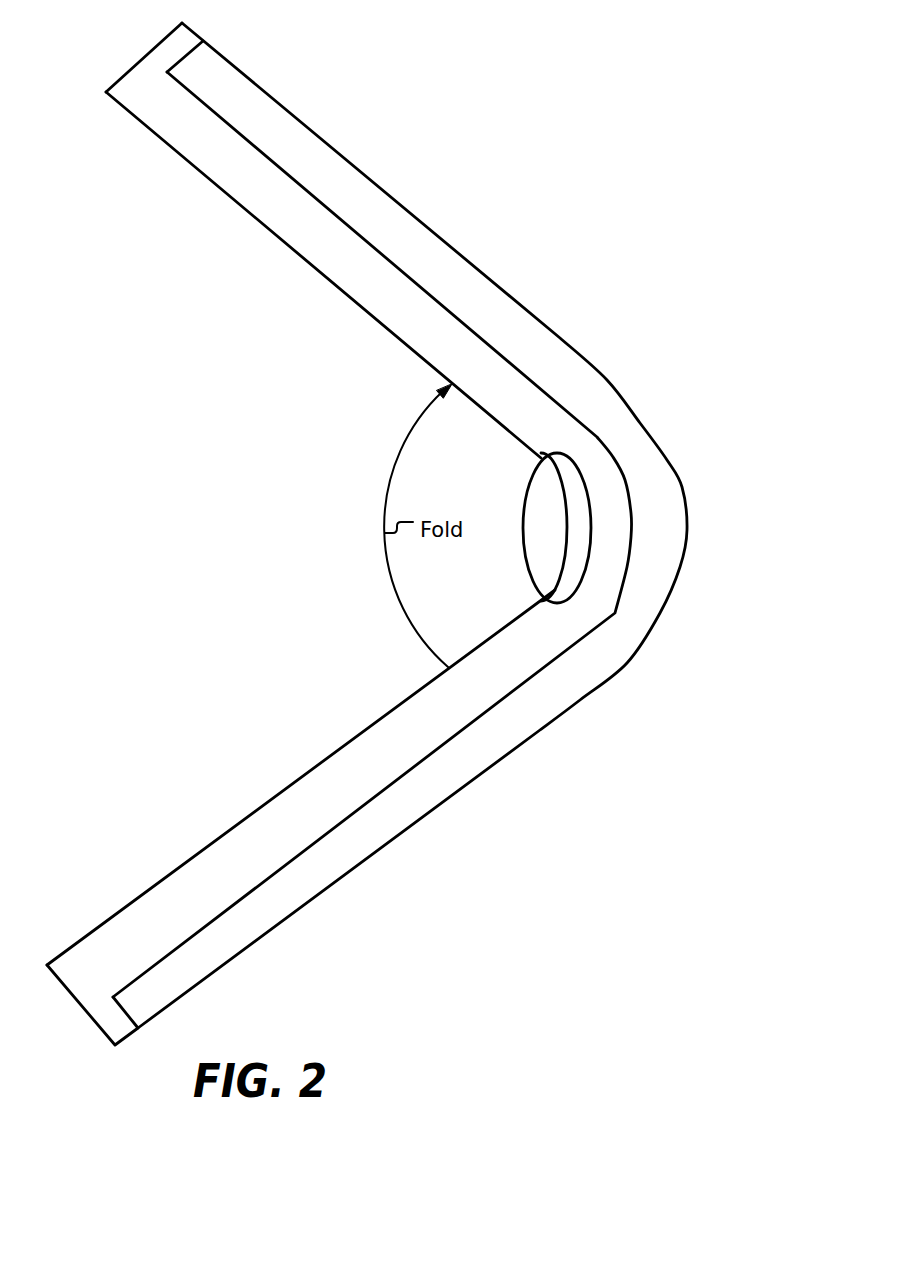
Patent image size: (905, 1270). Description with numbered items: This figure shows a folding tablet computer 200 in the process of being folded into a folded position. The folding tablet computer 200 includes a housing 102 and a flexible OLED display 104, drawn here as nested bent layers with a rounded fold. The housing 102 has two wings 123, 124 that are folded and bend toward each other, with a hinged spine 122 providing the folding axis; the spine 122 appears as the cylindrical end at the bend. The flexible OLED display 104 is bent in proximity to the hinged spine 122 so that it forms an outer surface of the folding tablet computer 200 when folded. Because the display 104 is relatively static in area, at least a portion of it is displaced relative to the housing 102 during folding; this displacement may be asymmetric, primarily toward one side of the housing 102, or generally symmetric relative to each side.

The folding tablet computer 200 is at (496, 136).
The housing 102 is at (332, 282).
The flexible OLED display 104 is at (687, 527).
The hinged spine 122 is at (527, 572).
The wing 123 is at (228, 172).
The wing 124 is at (228, 867).